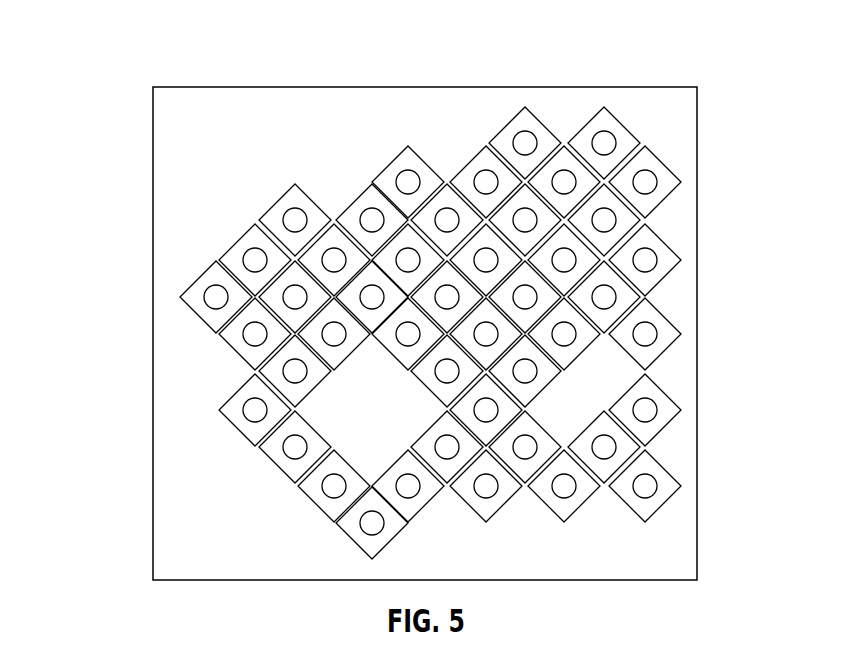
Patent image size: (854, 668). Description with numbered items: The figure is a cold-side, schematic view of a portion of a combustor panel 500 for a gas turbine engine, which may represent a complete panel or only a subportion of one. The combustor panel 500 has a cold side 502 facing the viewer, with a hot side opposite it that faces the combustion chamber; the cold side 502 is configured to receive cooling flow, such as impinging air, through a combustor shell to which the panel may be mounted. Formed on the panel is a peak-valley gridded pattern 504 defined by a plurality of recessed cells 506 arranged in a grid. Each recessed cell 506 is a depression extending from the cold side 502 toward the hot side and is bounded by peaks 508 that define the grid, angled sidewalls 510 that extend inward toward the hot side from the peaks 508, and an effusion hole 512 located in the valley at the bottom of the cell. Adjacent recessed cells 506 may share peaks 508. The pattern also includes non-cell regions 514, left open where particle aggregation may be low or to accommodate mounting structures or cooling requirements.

The combustor panel 500 is at (128, 66).
The cold side 502 is at (230, 105).
The peak-valley gridded pattern 504 is at (178, 240).
The recessed cells 506 is at (409, 164).
The peaks 508 is at (347, 227).
The angled sidewalls 510 is at (652, 200).
The effusion holes 512 is at (601, 140).
The non-cell regions 514 is at (630, 370).